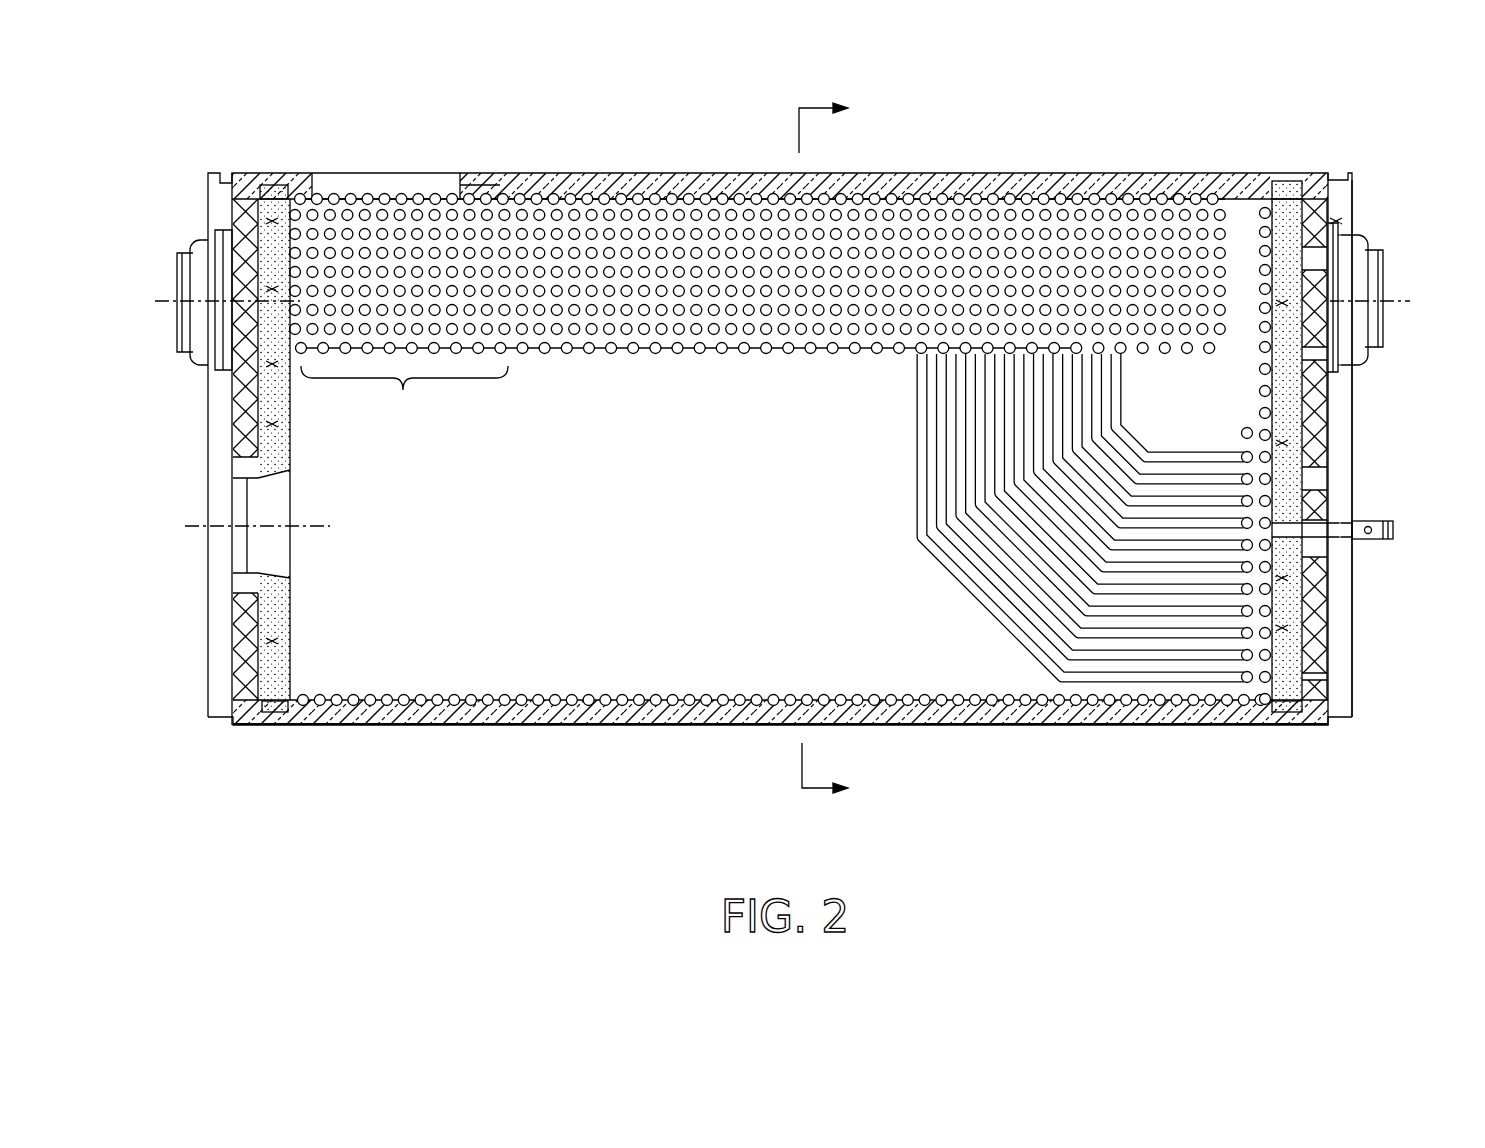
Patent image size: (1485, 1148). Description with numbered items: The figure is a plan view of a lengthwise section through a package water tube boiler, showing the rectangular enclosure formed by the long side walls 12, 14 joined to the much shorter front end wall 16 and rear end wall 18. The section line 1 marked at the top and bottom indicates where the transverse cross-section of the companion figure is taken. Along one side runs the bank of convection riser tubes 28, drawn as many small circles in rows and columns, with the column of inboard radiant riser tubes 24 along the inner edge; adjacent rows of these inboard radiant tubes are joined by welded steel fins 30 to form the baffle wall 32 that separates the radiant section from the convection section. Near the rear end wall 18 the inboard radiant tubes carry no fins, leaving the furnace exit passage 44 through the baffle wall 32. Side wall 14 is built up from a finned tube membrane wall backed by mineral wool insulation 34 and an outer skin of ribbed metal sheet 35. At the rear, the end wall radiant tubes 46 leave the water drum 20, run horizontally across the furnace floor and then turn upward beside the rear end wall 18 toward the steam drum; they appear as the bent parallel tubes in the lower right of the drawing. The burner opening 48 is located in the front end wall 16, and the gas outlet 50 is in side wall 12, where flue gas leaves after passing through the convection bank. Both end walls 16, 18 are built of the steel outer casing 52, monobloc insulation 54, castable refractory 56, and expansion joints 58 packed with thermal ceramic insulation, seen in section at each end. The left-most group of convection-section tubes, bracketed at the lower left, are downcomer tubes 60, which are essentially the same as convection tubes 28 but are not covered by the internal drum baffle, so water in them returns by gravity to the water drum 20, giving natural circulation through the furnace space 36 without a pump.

The section line 1- 1 is at (823, 449).
The side wall 12 is at (976, 168).
The side wall 14 is at (1130, 736).
The front end wall 16 is at (200, 630).
The rear end wall 18 is at (1368, 649).
The water drum 20 is at (197, 250).
The inboard radiant riser tubes 24 is at (757, 355).
The convection riser tubes 28 is at (512, 198).
The welded steel fins 30 is at (598, 355).
The baffle wall 32 is at (686, 358).
The mineral wool insulation 34 is at (773, 727).
The ribbed metal sheet 35 is at (605, 727).
The interior chamber 36 is at (574, 546).
The furnace exit passage 44 is at (1262, 353).
The end wall radiant tubes 46 is at (1198, 680).
The burner opening 48 is at (275, 562).
The gas outlet 50 is at (368, 178).
The steel outer casing 52 is at (1335, 587).
The monobloc insulation 54 is at (1325, 218).
The castable refractory 56 is at (1325, 440).
The expansion joints 58 is at (1287, 188).
The downcomer tubes 60 is at (404, 394).